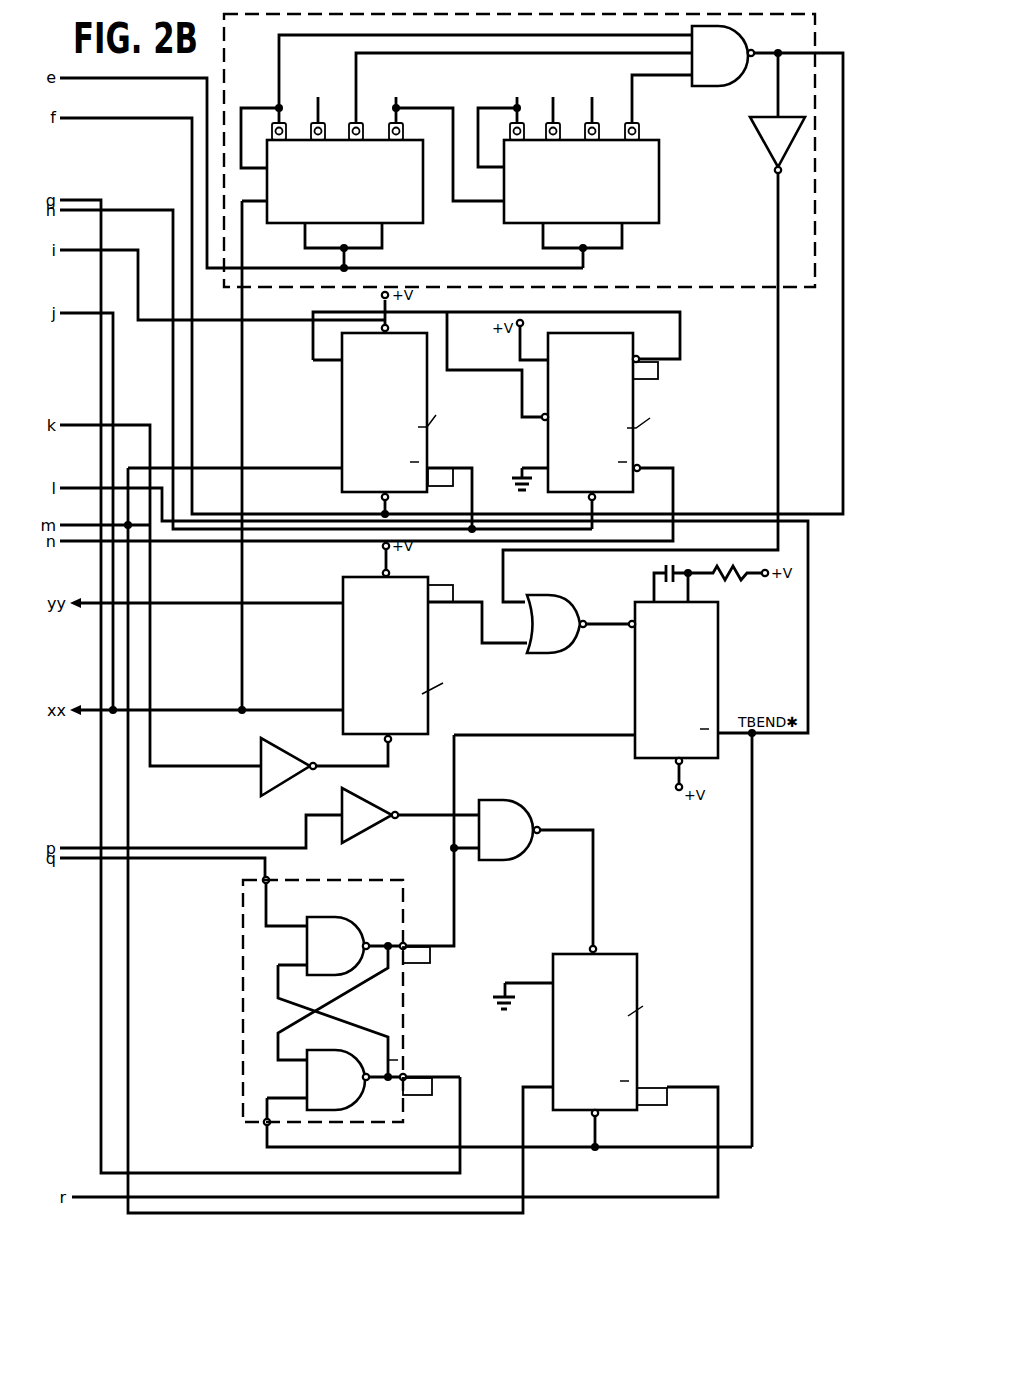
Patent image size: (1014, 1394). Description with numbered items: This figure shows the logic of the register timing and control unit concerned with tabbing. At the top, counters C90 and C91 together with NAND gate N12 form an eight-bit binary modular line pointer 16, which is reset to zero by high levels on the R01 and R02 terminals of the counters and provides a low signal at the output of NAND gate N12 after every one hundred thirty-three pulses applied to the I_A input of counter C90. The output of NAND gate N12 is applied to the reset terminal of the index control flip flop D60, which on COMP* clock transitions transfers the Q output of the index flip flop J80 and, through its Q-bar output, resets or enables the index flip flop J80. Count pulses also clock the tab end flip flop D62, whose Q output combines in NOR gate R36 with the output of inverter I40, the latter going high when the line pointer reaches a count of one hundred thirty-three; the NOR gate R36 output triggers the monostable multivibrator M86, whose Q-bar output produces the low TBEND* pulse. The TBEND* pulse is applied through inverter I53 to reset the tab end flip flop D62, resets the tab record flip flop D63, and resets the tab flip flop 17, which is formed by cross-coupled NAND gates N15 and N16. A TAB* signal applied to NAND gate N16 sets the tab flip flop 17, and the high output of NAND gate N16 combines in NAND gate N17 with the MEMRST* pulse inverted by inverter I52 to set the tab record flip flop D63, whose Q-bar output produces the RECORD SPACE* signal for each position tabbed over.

The line pointer 16 is at (725, 254).
The counter C90 is at (328, 195).
The counter C91 is at (597, 195).
The NAND gate N12 is at (717, 54).
The inverter I40 is at (777, 145).
The index control flip flop D60 is at (368, 435).
The index flip flop J80 is at (583, 437).
The tab end flip flop D62 is at (369, 674).
The NOR gate R36 is at (550, 618).
The monostable multivibrator M86 is at (659, 689).
The inverter I53 is at (288, 767).
The inverter I52 is at (370, 815).
The NAND gate N17 is at (505, 828).
The tab flip flop 17 is at (366, 927).
The NAND gate N16 is at (332, 942).
The NAND gate N15 is at (332, 1076).
The tab record flip flop D63 is at (578, 1056).